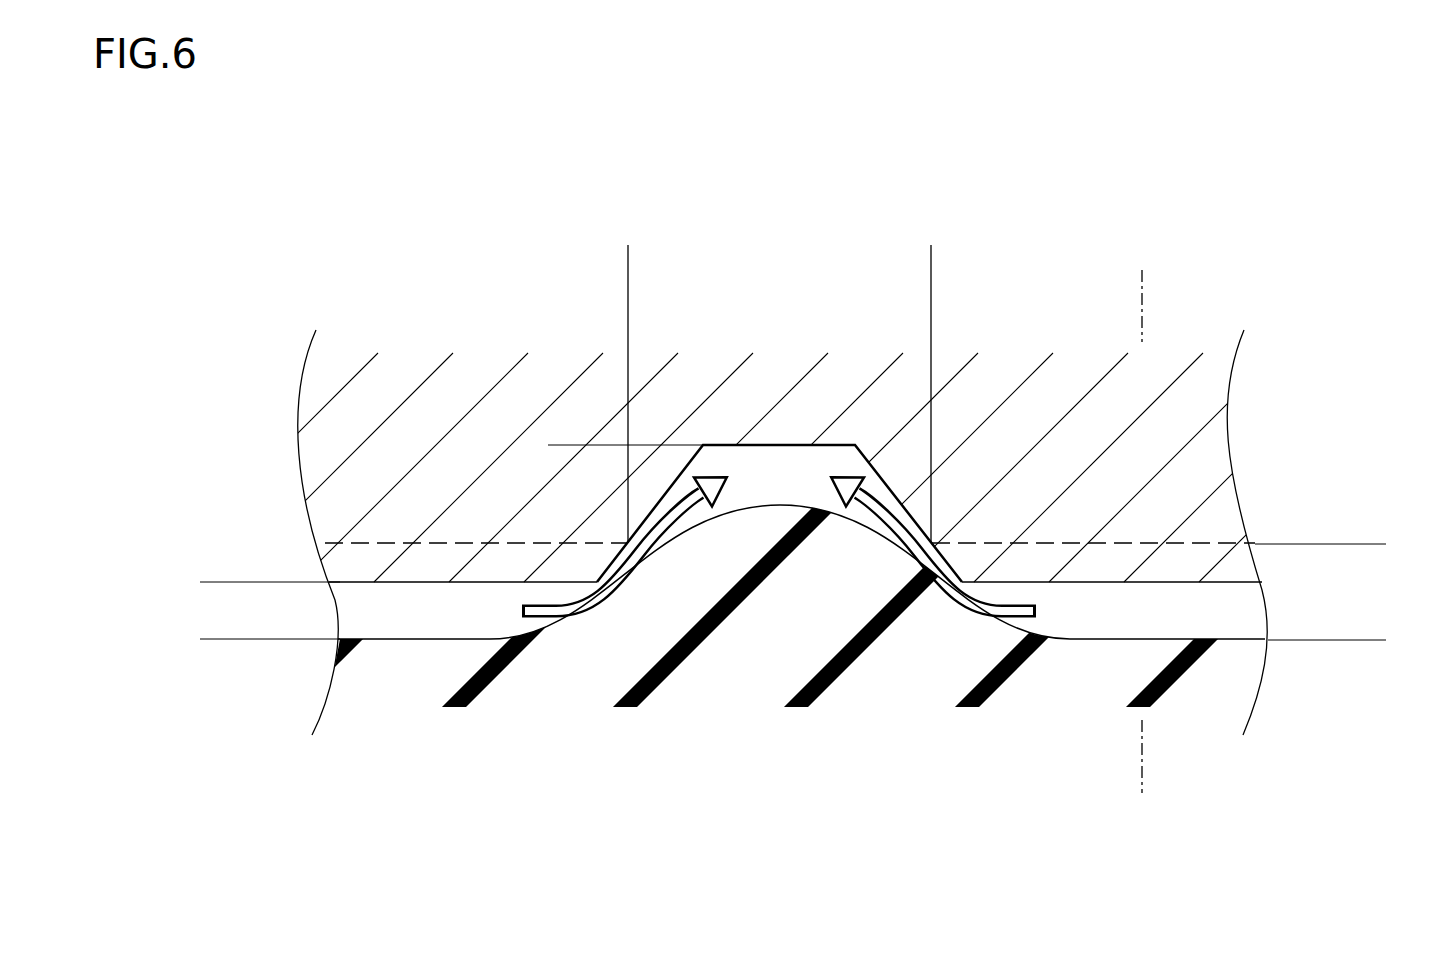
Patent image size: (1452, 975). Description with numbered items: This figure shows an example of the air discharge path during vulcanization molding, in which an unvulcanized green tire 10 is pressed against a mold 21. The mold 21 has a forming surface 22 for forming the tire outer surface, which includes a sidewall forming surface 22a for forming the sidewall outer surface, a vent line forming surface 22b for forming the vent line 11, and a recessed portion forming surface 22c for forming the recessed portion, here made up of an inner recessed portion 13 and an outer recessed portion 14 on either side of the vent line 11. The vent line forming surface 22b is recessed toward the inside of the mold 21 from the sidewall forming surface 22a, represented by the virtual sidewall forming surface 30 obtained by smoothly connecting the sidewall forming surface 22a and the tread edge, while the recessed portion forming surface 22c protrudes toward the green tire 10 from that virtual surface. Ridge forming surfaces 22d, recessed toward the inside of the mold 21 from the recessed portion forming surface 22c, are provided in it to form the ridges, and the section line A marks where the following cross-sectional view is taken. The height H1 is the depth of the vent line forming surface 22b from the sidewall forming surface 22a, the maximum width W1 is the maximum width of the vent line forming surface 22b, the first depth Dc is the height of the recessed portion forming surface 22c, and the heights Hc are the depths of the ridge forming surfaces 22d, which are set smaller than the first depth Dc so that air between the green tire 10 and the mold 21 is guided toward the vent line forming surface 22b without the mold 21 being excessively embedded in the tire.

The green tire 10 is at (628, 758).
The vent line 11 is at (797, 503).
The inner recessed portion 13 is at (1180, 613).
The outer recessed portion 14 is at (380, 613).
The mold 21 is at (568, 320).
The forming surface 22 is at (877, 812).
The sidewall forming surface 22a is at (1178, 545).
The vent line forming surface 22b is at (760, 447).
The recessed portion forming surface 22c is at (413, 642).
The ridge forming surfaces 22d is at (482, 575).
The virtual sidewall forming surface 30 is at (395, 543).
The maximum width of the vent line W1 is at (628, 251).
The height of the vent line H1 is at (555, 543).
The heights of the ridges Hc is at (207, 582).
The first depth of the recessed portion Dc is at (1379, 544).
The A-A line A is at (1180, 793).